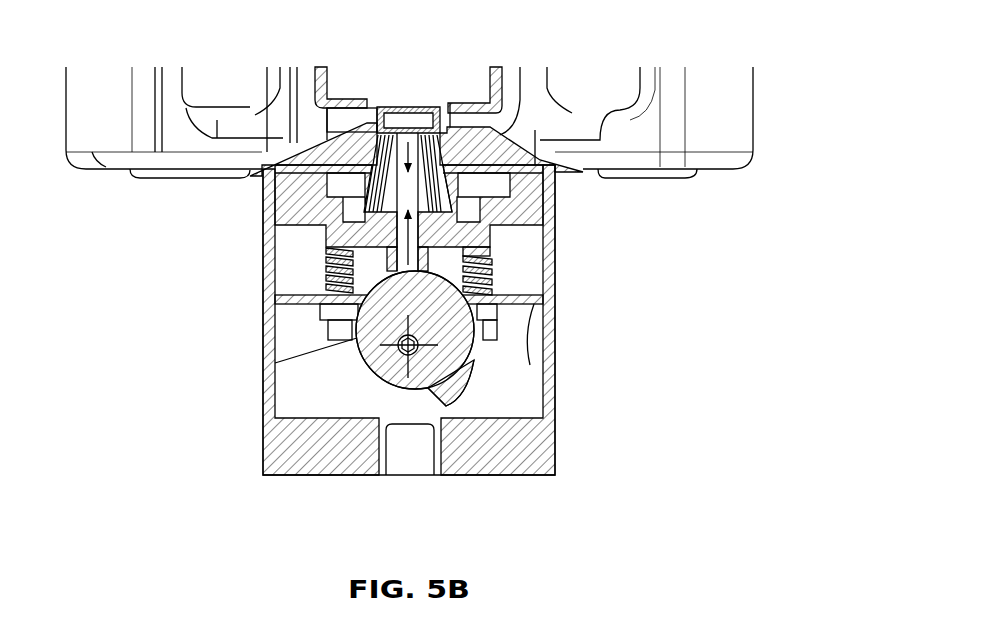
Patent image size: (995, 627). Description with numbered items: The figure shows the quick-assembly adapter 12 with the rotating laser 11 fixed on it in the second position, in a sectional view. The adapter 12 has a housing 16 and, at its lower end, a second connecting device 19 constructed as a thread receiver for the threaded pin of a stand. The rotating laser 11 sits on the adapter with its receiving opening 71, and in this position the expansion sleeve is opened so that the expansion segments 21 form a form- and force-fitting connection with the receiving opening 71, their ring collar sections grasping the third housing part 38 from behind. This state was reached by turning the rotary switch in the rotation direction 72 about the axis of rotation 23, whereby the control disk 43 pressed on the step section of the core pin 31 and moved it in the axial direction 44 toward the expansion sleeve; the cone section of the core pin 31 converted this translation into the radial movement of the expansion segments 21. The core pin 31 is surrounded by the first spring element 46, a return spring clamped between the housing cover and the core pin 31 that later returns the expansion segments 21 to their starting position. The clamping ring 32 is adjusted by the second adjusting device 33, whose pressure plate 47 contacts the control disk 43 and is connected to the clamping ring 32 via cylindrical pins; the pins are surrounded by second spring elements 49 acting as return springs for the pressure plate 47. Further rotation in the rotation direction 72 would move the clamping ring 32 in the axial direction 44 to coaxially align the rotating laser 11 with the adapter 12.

The rotating laser 11 is at (758, 118).
The quick-assembly adapter 12 is at (720, 322).
The housing 16 is at (262, 406).
The second connecting device 19 is at (412, 440).
The expansion segments 21 is at (343, 223).
The axis of rotation 23 is at (398, 350).
The core pin 31 is at (408, 160).
The clamping ring 32 is at (298, 172).
The second adjusting device 33 is at (494, 268).
The third housing part 38 is at (465, 205).
The control disk 43 is at (404, 360).
The axial direction 44 is at (418, 248).
The first spring element 46 is at (397, 268).
The pressure plate 47 is at (478, 343).
The second spring elements 49 is at (326, 290).
The receiving opening 71 is at (386, 118).
The rotation direction 72 is at (386, 356).